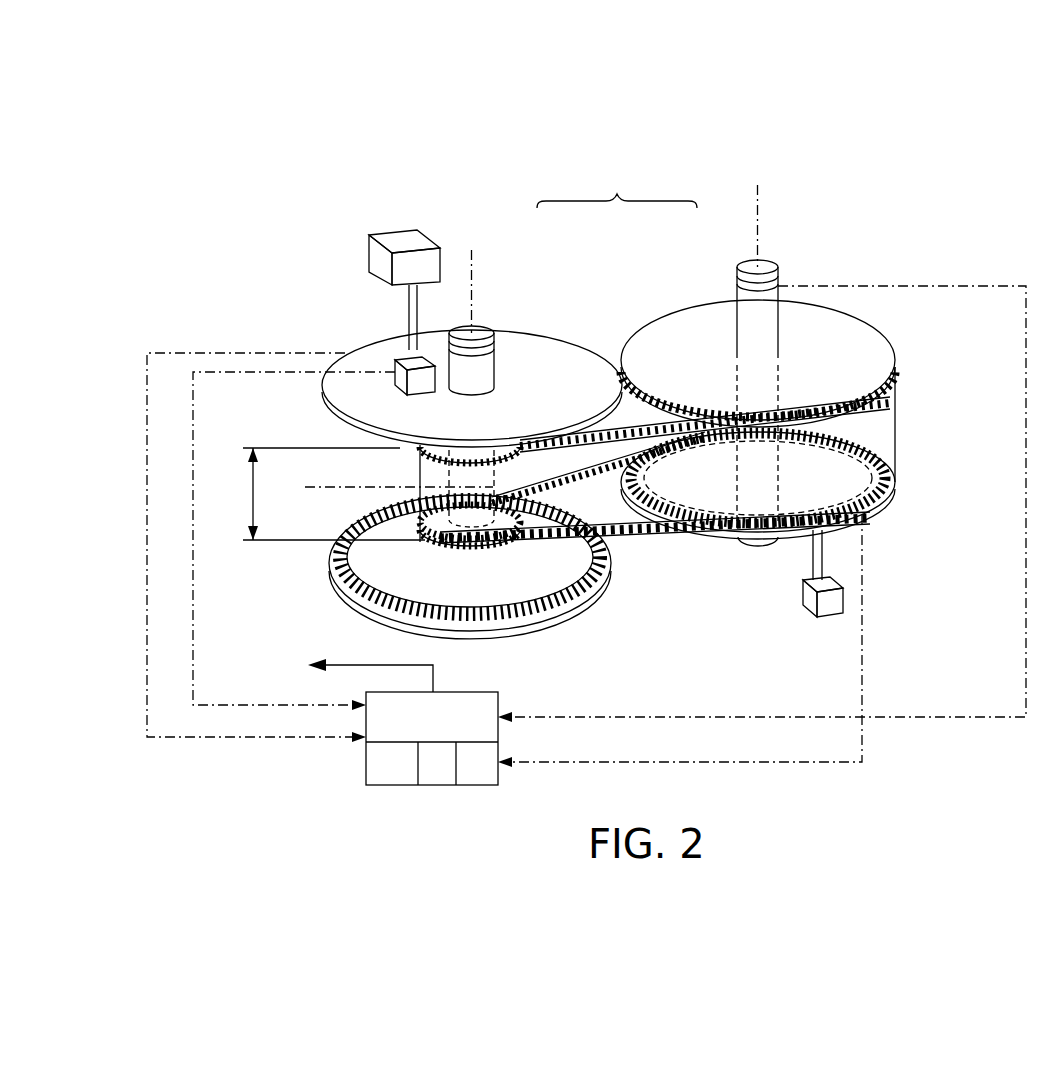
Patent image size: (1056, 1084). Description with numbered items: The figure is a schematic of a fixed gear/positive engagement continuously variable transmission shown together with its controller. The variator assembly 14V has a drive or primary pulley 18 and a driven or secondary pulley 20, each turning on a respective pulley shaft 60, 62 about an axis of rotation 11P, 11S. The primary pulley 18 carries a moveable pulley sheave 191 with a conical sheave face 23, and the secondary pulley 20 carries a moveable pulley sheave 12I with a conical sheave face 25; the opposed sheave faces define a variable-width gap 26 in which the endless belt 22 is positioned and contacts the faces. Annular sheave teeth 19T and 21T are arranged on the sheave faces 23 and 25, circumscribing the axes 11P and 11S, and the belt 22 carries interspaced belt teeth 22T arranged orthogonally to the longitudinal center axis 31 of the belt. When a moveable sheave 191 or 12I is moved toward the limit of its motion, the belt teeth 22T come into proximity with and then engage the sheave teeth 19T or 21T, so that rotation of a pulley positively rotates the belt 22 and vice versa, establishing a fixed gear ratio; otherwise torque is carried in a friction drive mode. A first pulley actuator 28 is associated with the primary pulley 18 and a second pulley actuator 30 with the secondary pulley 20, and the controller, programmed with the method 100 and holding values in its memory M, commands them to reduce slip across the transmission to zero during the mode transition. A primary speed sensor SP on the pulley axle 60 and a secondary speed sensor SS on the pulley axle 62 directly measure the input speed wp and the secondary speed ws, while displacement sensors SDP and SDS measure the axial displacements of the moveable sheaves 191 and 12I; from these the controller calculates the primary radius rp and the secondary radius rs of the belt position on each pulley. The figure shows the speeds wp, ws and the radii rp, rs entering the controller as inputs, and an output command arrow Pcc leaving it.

The primary pulley 18 is at (210, 345).
The moveable pulley sheave 191 is at (378, 333).
The pulley shaft 60 is at (482, 378).
The axis of rotation 11P is at (472, 295).
The first pulley actuator 28 is at (397, 232).
The variator assembly 14V is at (617, 188).
The axis of rotation 11S is at (758, 228).
The pulley shaft 62 is at (735, 286).
The secondary pulley 20 is at (926, 336).
The belt 22 is at (895, 420).
The sheave teeth 21T is at (885, 445).
The conical sheave face 25 is at (860, 466).
The moveable pulley sheave 12I is at (880, 536).
The second pulley actuator 30 is at (825, 618).
The longitudinal center axis 31 is at (350, 487).
The variable-width gap 26 is at (333, 494).
The conical sheave face 23 is at (458, 578).
The sheave teeth 19T is at (560, 606).
The belt teeth 22T is at (635, 540).
The method 100 is at (410, 781).
The primary speed sensor SP is at (487, 348).
The secondary speed sensor SS is at (775, 290).
The displacement sensor SDP is at (420, 396).
The displacement sensor SDS is at (862, 524).
The clamping pressure command Pcc is at (383, 665).
The primary radius rp is at (270, 705).
The input speed wp is at (255, 737).
The secondary radius rs is at (572, 717).
The secondary speed ws is at (572, 762).